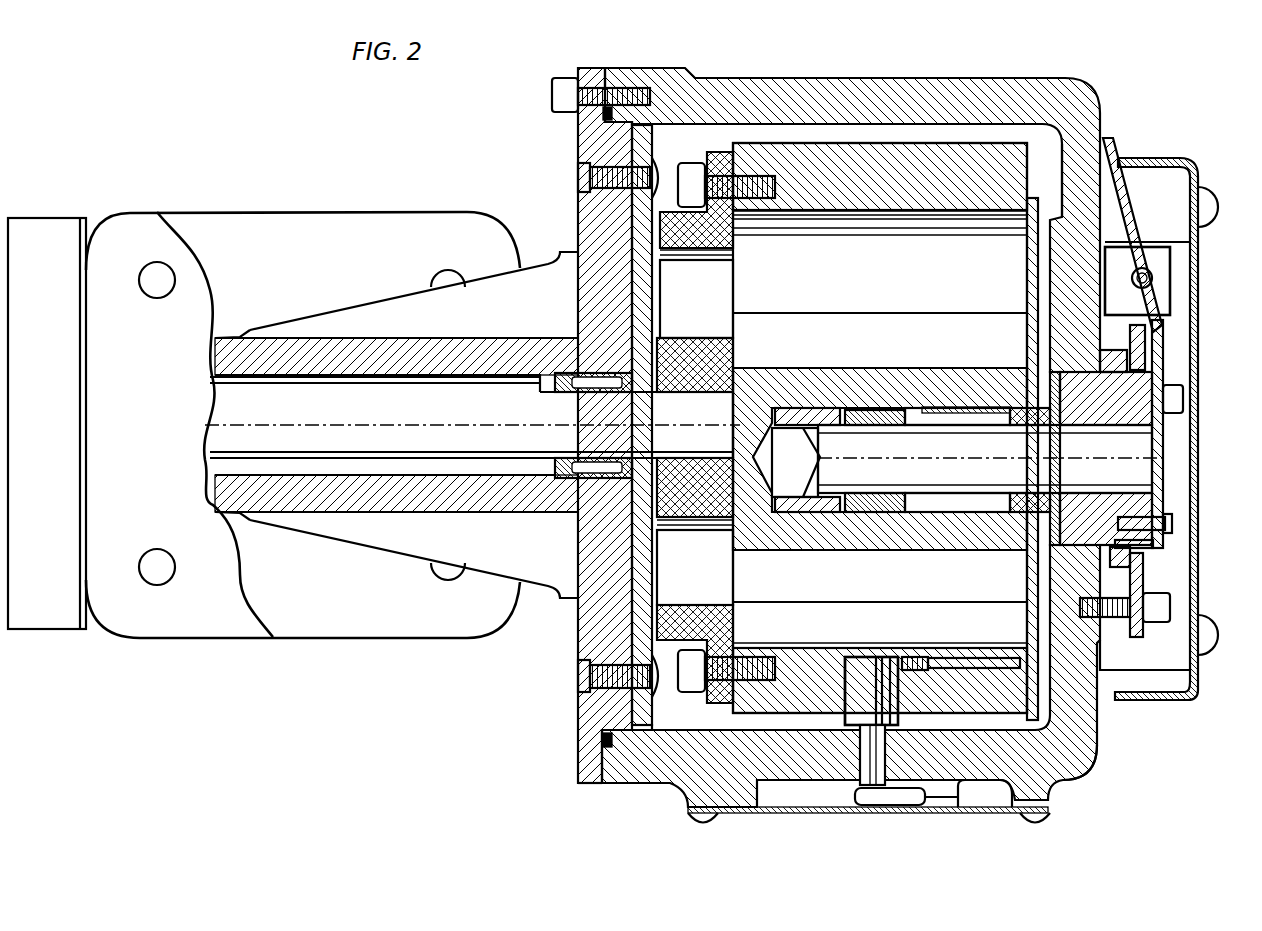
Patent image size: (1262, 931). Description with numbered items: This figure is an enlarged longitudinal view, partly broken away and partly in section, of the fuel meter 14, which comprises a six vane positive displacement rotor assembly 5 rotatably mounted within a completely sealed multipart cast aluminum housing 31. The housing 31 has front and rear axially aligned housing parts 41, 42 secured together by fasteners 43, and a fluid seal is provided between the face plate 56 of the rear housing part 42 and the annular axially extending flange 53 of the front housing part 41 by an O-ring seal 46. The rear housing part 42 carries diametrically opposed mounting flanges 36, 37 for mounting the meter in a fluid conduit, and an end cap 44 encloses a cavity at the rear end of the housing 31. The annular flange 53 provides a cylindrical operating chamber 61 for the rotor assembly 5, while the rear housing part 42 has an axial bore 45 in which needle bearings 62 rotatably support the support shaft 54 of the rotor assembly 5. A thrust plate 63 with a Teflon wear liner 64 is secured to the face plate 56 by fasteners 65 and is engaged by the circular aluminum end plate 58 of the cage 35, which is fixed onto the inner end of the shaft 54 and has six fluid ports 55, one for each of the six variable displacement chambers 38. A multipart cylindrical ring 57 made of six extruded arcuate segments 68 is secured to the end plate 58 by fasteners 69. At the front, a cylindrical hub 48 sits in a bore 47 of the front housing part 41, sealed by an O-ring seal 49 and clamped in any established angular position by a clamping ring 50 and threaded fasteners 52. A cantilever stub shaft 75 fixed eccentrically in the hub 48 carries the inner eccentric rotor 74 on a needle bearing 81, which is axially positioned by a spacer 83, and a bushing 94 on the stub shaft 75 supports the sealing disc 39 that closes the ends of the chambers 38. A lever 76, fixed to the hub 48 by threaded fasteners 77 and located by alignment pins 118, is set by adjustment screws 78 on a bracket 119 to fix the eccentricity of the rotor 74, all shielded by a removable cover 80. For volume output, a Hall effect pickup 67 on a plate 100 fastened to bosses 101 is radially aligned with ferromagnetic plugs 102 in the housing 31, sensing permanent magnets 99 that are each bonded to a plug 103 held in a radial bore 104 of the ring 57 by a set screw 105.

The rotor assembly 5 is at (970, 138).
The fuel meter 14 is at (518, 130).
The housing 31 is at (605, 66).
The cage 35 is at (850, 141).
The mounting flange 36 is at (290, 634).
The mounting flange 37 is at (183, 626).
The variable displacement chamber 38 is at (909, 307).
The sealing disc 39 is at (1027, 270).
The front housing part 41 is at (890, 78).
The rear housing part 42 is at (578, 214).
The fasteners 43 is at (563, 86).
The end cap 44 is at (57, 234).
The bore 45 is at (216, 384).
The O-ring seal 46 is at (602, 740).
The cylindrical bore 47 is at (1045, 380).
The hub 48 is at (1113, 410).
The O-ring seal 49 is at (1123, 344).
The clamping ring 50 is at (1142, 584).
The threaded fasteners 52 is at (1172, 604).
The annular flange 53 is at (660, 766).
The support shaft 54 is at (445, 417).
The fluid ports 55 is at (712, 307).
The face plate 56 is at (584, 786).
The cylindrical ring 57 is at (885, 192).
The end plate 58 is at (733, 238).
The operating chamber 61 is at (942, 122).
The needle bearings 62 is at (592, 389).
The thrust plate 63 is at (630, 762).
The wear liner 64 is at (655, 572).
The fasteners 65 is at (592, 178).
The Hall effect pickup 67 is at (912, 806).
The arcuate segments 68 is at (940, 203).
The fasteners 69 is at (690, 178).
The inner eccentric rotor 74 is at (950, 367).
The stub shaft 75 is at (962, 452).
The lever 76 is at (1165, 437).
The threaded fasteners 77 is at (1184, 392).
The adjustment screws 78 is at (1154, 280).
The cover 80 is at (1199, 325).
The needle bearing 81 is at (890, 421).
The spacer 83 is at (803, 497).
The bushing 94 is at (1030, 425).
The permanent magnets 99 is at (871, 691).
The plate 100 is at (990, 810).
The bosses 101 is at (1057, 790).
The ferromagnetic plugs 102 is at (858, 786).
The plug 103 is at (880, 657).
The radial bore 104 is at (862, 660).
The set screw 105 is at (922, 657).
The alignment pins 118 is at (1173, 522).
The bracket 119 is at (1162, 262).